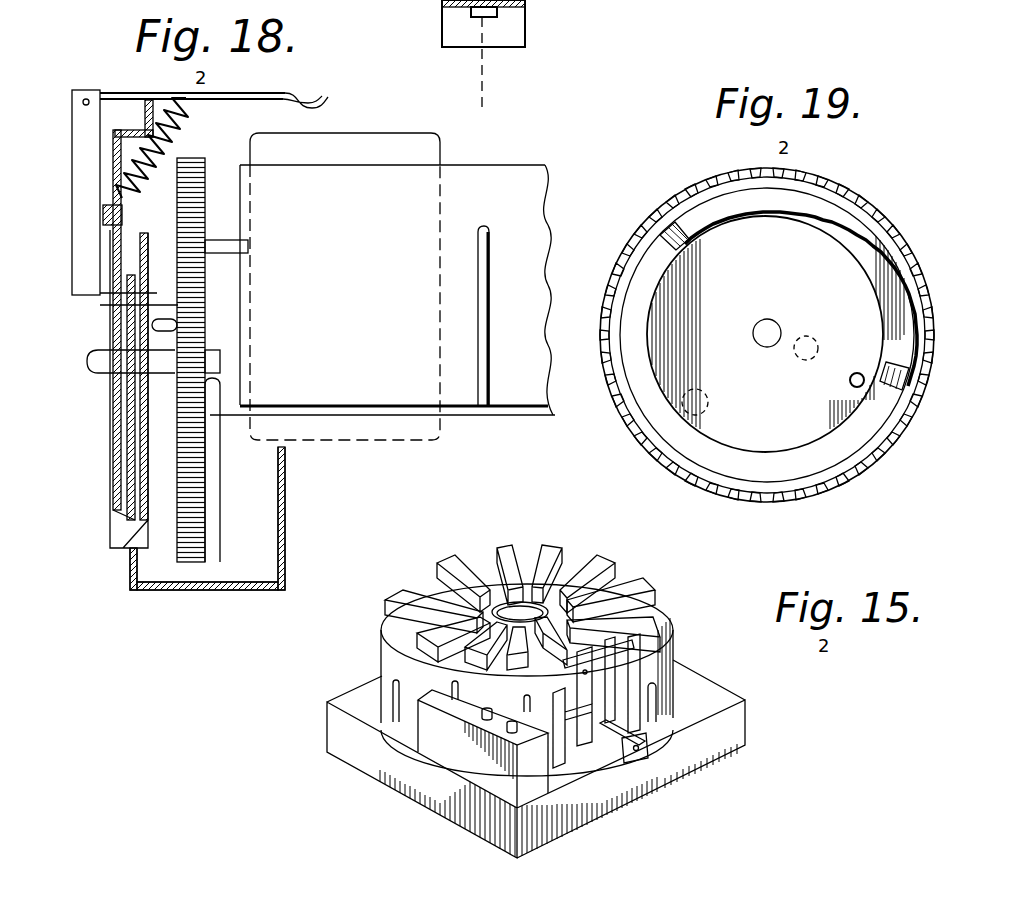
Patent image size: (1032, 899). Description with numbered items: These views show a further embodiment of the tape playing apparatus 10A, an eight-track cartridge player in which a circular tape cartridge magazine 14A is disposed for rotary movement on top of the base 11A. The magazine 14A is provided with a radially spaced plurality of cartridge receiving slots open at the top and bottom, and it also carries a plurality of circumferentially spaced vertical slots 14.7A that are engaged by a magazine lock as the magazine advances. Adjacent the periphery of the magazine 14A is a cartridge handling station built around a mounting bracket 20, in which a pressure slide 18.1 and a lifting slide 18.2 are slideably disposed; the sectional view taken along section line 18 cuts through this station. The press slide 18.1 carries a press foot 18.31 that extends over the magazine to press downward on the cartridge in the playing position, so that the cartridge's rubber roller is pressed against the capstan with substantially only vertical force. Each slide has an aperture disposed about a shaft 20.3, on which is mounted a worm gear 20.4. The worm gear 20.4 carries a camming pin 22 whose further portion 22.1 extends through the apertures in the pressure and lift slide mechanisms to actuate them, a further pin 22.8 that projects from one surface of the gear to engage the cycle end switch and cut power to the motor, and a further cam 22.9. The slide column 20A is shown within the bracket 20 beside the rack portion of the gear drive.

In FIG. 18, the press slide 18.1 is at (112, 142).
In FIG. 18, the press foot 18.31 is at (303, 93).
In FIG. 18, the lift slide 18.2 is at (195, 583).
In FIG. 18, the section line 18— 18 is at (482, 108).
In FIG. 18, the mounting bracket 20 is at (125, 538).
In FIG. 18, the shaft 20.3 is at (100, 348).
In FIG. 18, the slide column 20A is at (213, 535).
In FIG. 19, the worm gear 20.4 is at (883, 460).
In FIG. 18, the camming pin 22 is at (222, 238).
In FIG. 19, the camming pin 22 is at (850, 380).
In FIG. 18, the further portion of camming pin 22.1 is at (158, 292).
In FIG. 19, the further portion of camming pin 22.1 is at (805, 335).
In FIG. 18, the further pin 22.8 is at (167, 335).
In FIG. 19, the further pin 22.8 is at (709, 407).
In FIG. 19, the further cam 22.9 is at (727, 205).
In FIG. 18, the circular tape cartridge magazine 14A is at (495, 180).
In FIG. 15, the circular tape cartridge magazine 14A is at (620, 580).
In FIG. 18, the circumferentially spaced slots 14.7A is at (490, 269).
In FIG. 15, the circumferentially spaced slots 14.7A is at (658, 722).
In FIG. 15, the tape playing apparatus 10A is at (677, 662).
In FIG. 15, the base 11A is at (733, 727).